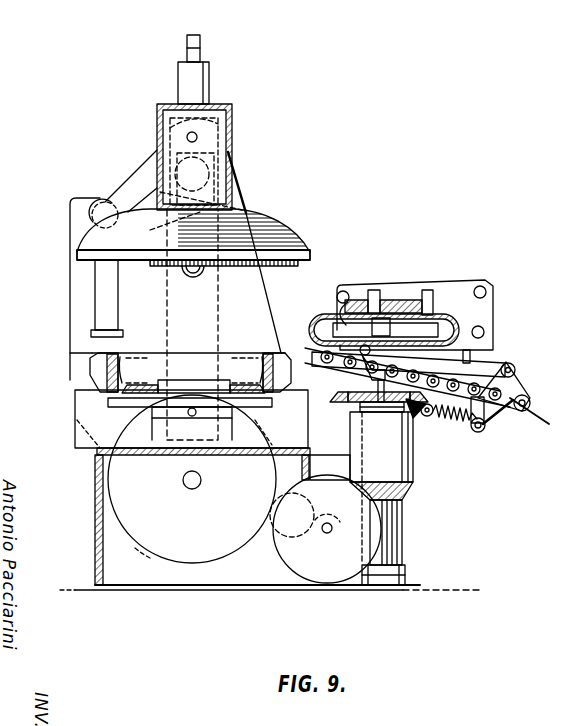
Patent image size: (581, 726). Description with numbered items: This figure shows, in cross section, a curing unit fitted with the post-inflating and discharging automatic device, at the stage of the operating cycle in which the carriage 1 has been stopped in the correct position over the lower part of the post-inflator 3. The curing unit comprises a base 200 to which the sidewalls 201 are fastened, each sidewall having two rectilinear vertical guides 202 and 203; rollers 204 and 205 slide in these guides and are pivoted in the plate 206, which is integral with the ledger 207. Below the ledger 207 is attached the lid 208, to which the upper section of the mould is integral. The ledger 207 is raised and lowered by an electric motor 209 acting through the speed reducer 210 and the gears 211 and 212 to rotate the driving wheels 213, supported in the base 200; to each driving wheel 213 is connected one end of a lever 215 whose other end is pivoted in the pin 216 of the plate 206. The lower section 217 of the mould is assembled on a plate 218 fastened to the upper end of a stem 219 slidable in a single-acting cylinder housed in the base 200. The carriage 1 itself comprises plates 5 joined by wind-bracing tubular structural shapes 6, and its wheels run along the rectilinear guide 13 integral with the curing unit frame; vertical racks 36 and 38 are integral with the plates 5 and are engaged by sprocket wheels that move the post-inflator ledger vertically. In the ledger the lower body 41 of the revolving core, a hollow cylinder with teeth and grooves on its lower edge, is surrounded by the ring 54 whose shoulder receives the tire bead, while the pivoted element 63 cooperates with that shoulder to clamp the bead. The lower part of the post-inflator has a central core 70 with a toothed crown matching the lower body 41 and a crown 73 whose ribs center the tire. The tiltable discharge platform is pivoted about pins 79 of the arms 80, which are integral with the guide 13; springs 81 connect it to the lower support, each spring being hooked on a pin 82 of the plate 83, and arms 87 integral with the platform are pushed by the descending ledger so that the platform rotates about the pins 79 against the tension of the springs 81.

The carriage 1 is at (469, 281).
The lower part of the post-inflator 3 is at (415, 408).
The plate 5 is at (495, 287).
The wind-bracing tubular structural shape 6 is at (481, 287).
The rectilinear guide 13 is at (495, 364).
The vertical rack 36 is at (430, 290).
The vertical rack 38 is at (372, 291).
The lower body 41 is at (385, 324).
The ring 54 is at (348, 323).
The element 63 is at (316, 322).
The central core 70 is at (385, 400).
The crown 73 is at (350, 402).
The pin 79 is at (540, 417).
The arm 80 is at (522, 393).
The spring 81 is at (455, 423).
The pin 82 is at (482, 433).
The plate 83 is at (489, 414).
The arm 87 is at (362, 366).
The base 200 is at (97, 568).
The sidewall 201 is at (52, 328).
The rectilinear vertical guide 202 is at (106, 280).
The rectilinear vertical guide 203 is at (168, 190).
The roller 204 is at (100, 222).
The roller 205 is at (240, 137).
The plate 206 is at (118, 193).
The ledger 207 is at (230, 105).
The lid 208 is at (290, 238).
The electric motor 209 is at (413, 484).
The speed reducer 210 is at (392, 544).
The gear 211 is at (336, 550).
The gear 212 is at (282, 545).
The driving wheel 213 is at (138, 555).
The lever 215 is at (240, 212).
The pin 216 is at (190, 136).
The lower section of the mould 217 is at (143, 385).
The plate 218 is at (78, 398).
The stem 219 is at (158, 445).